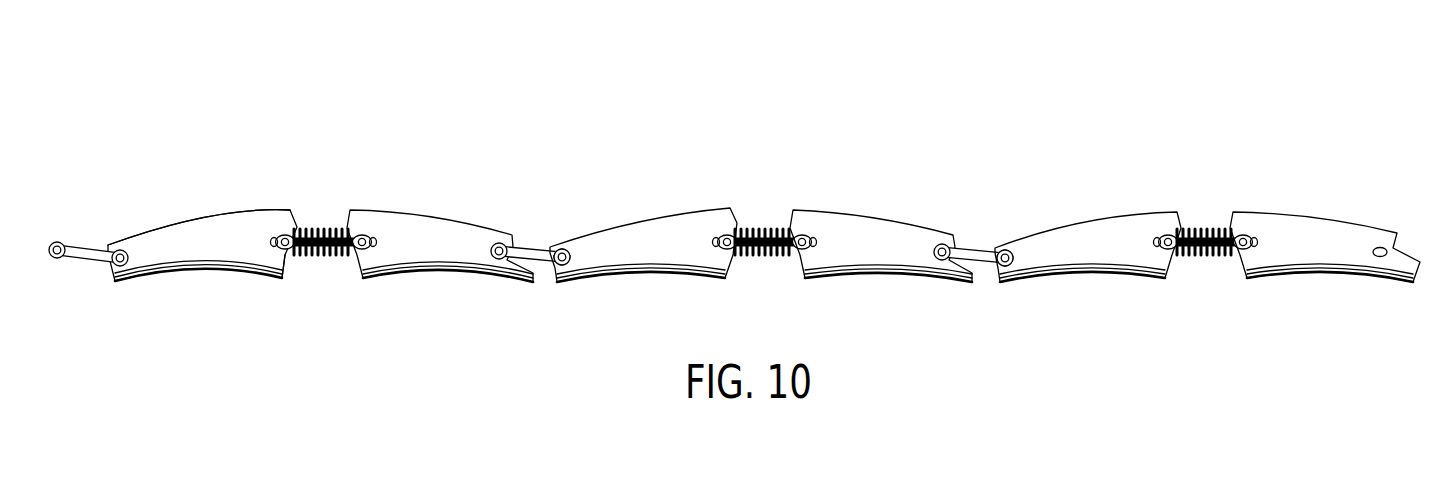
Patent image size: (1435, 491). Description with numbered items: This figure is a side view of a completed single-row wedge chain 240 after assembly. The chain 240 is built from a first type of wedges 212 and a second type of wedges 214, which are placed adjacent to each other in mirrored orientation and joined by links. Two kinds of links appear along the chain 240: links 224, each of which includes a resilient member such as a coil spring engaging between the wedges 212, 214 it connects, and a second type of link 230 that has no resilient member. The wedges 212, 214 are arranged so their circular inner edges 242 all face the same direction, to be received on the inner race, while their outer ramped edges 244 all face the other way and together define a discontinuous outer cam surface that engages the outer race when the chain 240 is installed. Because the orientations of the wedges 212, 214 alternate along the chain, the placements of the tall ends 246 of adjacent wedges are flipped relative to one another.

The single-row wedge chain 240 is at (1302, 104).
The second type of wedges 214 is at (180, 233).
The first type of wedges 212 is at (423, 228).
The outer ramped edges 244 is at (245, 212).
The tall ends 246 is at (286, 264).
The circular inner edges 242 is at (237, 273).
The link 224 is at (313, 227).
The second type of link 230 is at (972, 252).